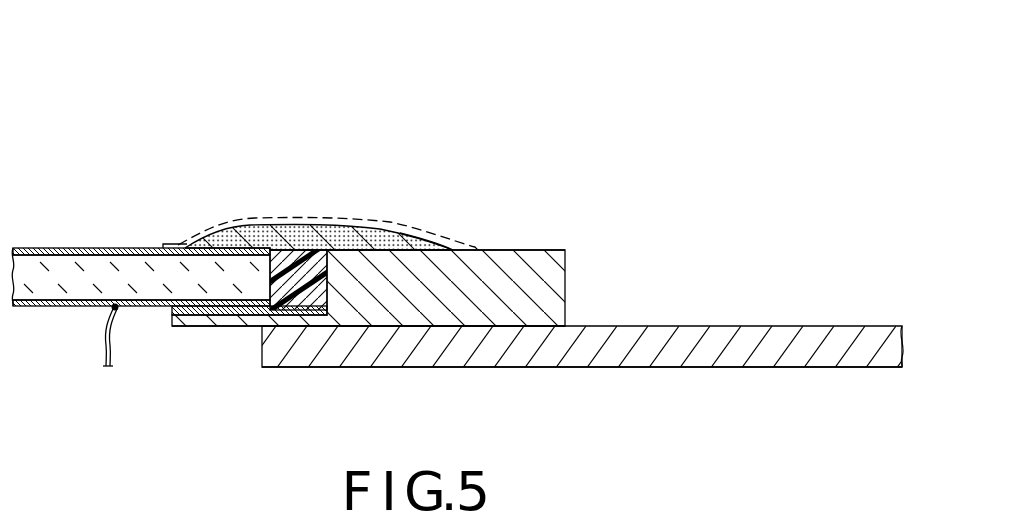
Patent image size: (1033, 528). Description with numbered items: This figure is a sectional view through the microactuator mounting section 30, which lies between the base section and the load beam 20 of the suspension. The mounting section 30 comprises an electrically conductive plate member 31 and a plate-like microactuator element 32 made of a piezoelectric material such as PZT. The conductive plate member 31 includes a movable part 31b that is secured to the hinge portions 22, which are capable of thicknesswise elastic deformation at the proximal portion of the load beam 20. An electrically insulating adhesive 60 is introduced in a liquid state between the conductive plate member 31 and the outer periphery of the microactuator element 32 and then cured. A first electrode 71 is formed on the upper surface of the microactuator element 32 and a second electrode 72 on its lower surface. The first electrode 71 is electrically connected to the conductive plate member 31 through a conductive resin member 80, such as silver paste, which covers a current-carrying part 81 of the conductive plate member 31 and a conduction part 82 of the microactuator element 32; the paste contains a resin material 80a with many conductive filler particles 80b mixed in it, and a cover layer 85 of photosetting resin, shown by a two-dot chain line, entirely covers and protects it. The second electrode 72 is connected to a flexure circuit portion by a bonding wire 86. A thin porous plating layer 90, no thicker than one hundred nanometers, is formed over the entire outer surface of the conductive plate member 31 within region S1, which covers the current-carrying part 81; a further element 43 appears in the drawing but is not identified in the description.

The microactuator mounting section 30 is at (112, 100).
The microactuator element 32 is at (91, 270).
The first electrode 71 is at (26, 247).
The second electrode 72 is at (35, 306).
The conduction part 82 is at (196, 242).
The bonding wire 86 is at (103, 338).
The conductive resin member 80 is at (237, 233).
The resin material 80a is at (243, 248).
The conductive filler particles 80b is at (292, 242).
The cover layer 85 is at (403, 220).
The thin porous plating layer 90 is at (357, 249).
The current-carrying part 81 is at (418, 237).
The region S1 is at (490, 243).
The adhesive 60 is at (298, 305).
The thin layer 43 is at (213, 319).
The conductive plate member 31 is at (547, 250).
The movable part 31b is at (420, 318).
The load beam 20 is at (777, 340).
The hinge portions 22 is at (600, 369).